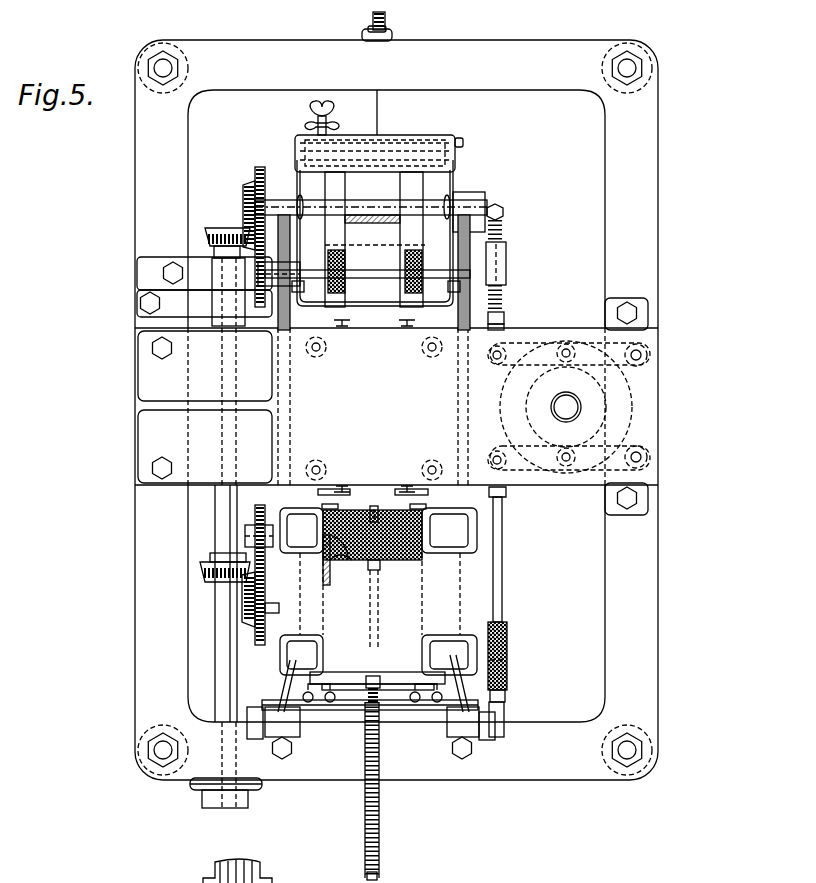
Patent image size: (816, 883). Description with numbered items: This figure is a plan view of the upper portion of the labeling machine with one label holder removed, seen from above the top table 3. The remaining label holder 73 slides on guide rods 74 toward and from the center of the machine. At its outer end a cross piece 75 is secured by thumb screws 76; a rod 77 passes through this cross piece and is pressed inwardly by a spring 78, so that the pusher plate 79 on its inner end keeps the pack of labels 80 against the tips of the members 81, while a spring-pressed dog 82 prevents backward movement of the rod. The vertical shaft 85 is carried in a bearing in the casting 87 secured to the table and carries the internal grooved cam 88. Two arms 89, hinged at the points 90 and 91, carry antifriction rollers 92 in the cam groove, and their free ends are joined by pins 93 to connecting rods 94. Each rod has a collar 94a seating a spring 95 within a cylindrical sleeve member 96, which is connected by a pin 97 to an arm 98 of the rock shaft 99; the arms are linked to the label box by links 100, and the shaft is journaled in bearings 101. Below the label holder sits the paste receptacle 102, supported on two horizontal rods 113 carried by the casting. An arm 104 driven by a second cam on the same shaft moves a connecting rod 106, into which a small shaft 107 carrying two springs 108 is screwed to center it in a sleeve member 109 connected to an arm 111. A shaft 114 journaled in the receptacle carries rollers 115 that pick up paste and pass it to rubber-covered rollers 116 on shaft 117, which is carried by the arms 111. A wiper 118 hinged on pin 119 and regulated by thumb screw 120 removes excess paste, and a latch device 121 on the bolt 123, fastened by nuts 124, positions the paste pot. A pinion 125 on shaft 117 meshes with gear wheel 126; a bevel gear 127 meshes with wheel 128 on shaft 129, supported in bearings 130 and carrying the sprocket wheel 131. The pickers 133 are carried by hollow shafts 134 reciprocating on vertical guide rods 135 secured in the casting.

The top table 3 is at (652, 554).
The label holder 73 is at (378, 591).
The guide rod 74 is at (283, 611).
The cross piece 75 is at (402, 684).
The thumb screw 76 is at (335, 698).
The rod 77 is at (378, 661).
The spring 78 is at (380, 806).
The pusher plate 79 is at (332, 556).
The pack of labels 80 is at (323, 565).
The members 81 is at (320, 492).
The spring-pressed dog 82 is at (371, 690).
The vertical shaft 85 is at (568, 410).
The casting 87 is at (438, 406).
The internal grooved cam 88 is at (512, 382).
The arms 89 is at (538, 345).
The hinge point 90 is at (647, 457).
The hinge point 91 is at (647, 355).
The antifriction roller 92 is at (567, 363).
The pin 93 is at (497, 452).
The connecting rod 94 is at (502, 540).
The collar 94a is at (507, 680).
The spring 95 is at (507, 656).
The cylindrical sleeve member 96 is at (507, 636).
The pin 97 is at (506, 726).
The arm 98 is at (252, 739).
The rock shaft 99 is at (352, 712).
The link 100 is at (284, 680).
The bearing 101 is at (282, 708).
The paste receptacle 102 is at (455, 176).
The arm 104 is at (500, 331).
The connecting rod 106 is at (504, 318).
The small shaft 107 is at (506, 251).
The spring 108 is at (503, 232).
The sleeve member 109 is at (506, 268).
The arm 111 is at (298, 290).
The horizontal rod 113 is at (290, 262).
The shaft 114 is at (375, 215).
The roller 115 is at (400, 245).
The rubber-covered roller 116 is at (405, 262).
The shaft 117 is at (445, 276).
The wiper 118 is at (384, 165).
The pin or shaft 119 is at (463, 143).
The thumb screw 120 is at (327, 112).
The latch device 121 is at (378, 115).
The bolt 123 is at (372, 22).
The nut 124 is at (378, 40).
The pinion 125 is at (266, 290).
The gear wheel 126 is at (261, 167).
The bevel gear 127 is at (244, 196).
The bevel gear wheel 128 is at (224, 230).
The shaft 129 is at (218, 518).
The bearing 130 is at (226, 318).
The sprocket wheel 131 is at (242, 790).
The picker 133 is at (344, 327).
The hollow rod or shaft 134 is at (321, 350).
The vertical guide rod 135 is at (316, 352).